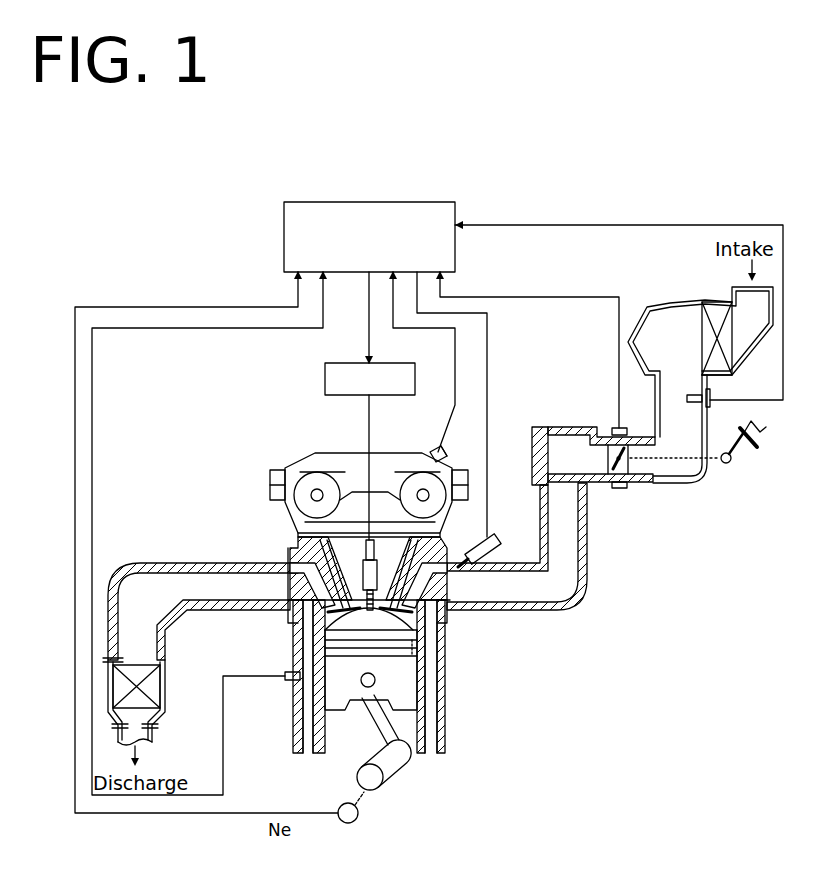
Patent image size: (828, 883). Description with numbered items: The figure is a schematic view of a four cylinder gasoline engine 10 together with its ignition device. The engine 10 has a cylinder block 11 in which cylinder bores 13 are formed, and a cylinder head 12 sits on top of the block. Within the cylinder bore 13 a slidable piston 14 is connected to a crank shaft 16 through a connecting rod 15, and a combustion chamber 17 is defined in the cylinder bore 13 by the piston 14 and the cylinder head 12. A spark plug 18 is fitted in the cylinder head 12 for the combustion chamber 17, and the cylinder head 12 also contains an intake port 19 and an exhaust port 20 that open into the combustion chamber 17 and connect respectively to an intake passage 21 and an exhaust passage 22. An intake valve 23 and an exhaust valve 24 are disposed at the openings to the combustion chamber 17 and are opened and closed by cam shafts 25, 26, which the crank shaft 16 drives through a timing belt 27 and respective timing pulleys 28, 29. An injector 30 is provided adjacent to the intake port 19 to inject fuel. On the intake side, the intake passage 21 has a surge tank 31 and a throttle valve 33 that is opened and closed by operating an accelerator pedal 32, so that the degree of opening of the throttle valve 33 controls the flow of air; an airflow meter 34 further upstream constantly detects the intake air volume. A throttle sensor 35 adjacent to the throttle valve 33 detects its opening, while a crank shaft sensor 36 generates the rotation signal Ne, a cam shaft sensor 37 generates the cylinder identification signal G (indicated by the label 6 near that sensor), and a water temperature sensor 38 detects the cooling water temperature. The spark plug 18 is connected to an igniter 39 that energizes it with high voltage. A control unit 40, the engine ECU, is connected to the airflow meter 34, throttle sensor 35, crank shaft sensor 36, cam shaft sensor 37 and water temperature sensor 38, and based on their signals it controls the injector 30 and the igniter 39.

The cam position sensor portion 6 is at (445, 452).
The engine 10 is at (378, 696).
The cylinder block 11 is at (292, 655).
The cylinder head 12 is at (296, 543).
The cylinder bore 13 is at (325, 752).
The piston 14 is at (330, 712).
The connecting rod 15 is at (372, 738).
The crank shaft 16 is at (388, 780).
The combustion chamber 17 is at (420, 646).
The spark plug 18 is at (371, 548).
The intake port 19 is at (442, 570).
The exhaust port 20 is at (300, 580).
The intake passage 21 is at (542, 602).
The exhaust passage 22 is at (210, 566).
The intake valve 23 is at (404, 606).
The exhaust valve 24 is at (332, 606).
The cam shaft 25 is at (424, 470).
The cam shaft 26 is at (312, 470).
The timing belt 27 is at (352, 490).
The timing pulley 28 is at (400, 470).
The timing pulley 29 is at (330, 470).
The injector 30 is at (489, 538).
The surge tank 31 is at (566, 428).
The accelerator pedal 32 is at (740, 462).
The throttle valve 33 is at (632, 456).
The airflow meter 34 is at (712, 400).
The throttle sensor 35 is at (611, 429).
The crank shaft sensor 36 is at (349, 824).
The cam shaft sensor 37 is at (440, 446).
The water temperature sensor 38 is at (290, 682).
The igniter 39 is at (411, 364).
The control unit 40 is at (424, 201).